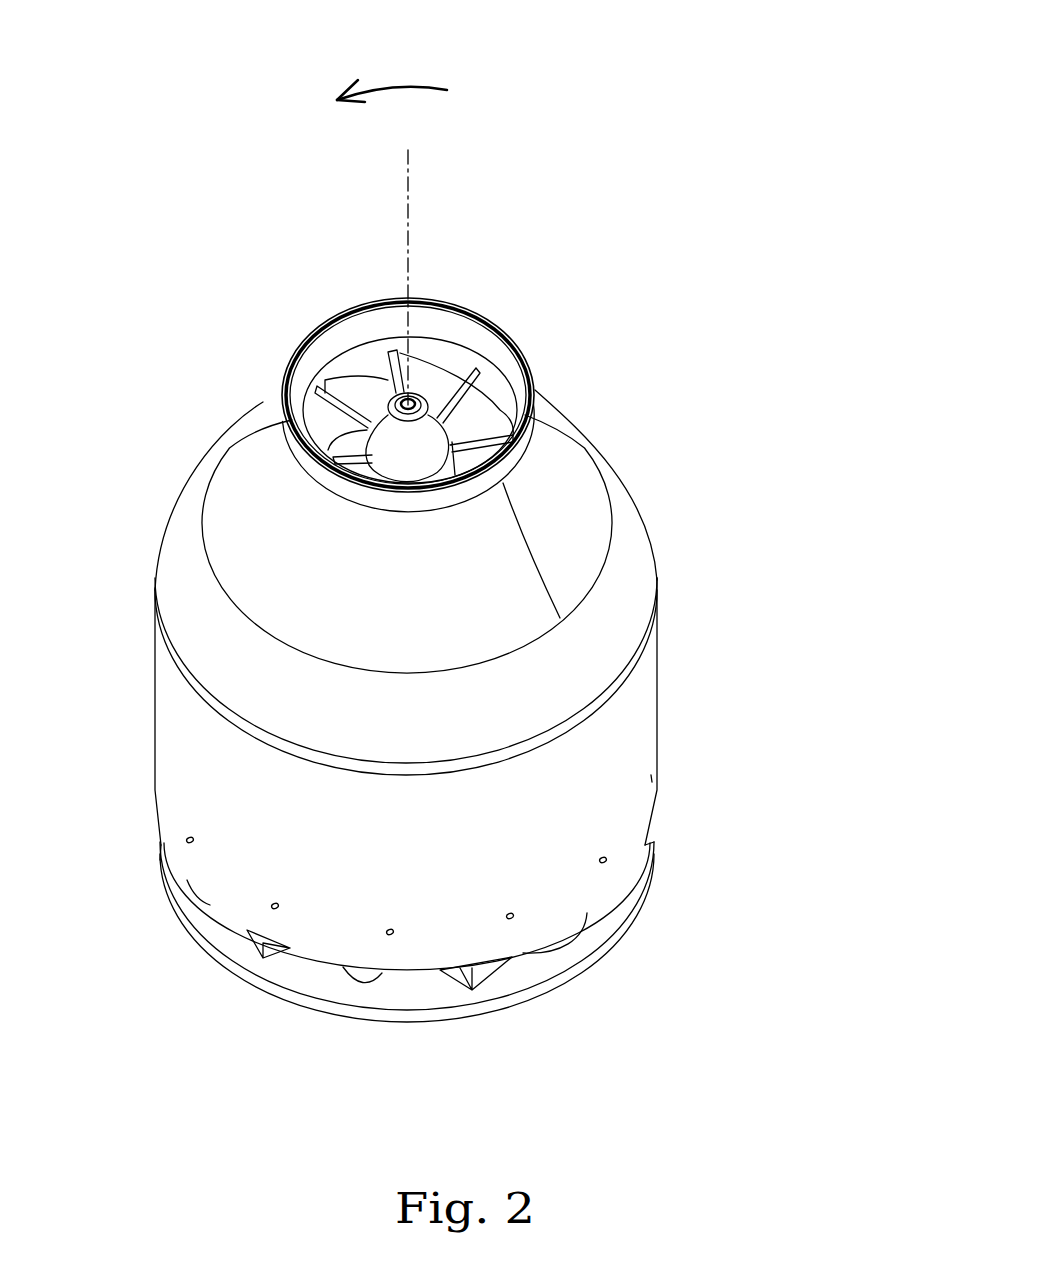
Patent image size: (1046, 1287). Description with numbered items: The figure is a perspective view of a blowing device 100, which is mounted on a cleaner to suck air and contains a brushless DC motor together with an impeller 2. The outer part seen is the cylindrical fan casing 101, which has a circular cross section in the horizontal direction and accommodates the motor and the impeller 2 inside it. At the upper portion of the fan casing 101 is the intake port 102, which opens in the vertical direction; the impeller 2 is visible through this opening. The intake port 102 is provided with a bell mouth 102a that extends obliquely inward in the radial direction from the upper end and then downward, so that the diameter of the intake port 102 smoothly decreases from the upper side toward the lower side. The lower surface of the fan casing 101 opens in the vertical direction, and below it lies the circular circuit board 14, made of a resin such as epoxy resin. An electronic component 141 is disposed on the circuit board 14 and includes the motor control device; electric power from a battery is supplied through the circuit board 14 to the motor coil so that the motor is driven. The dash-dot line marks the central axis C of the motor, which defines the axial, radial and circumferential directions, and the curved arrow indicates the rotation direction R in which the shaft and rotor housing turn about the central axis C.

The blowing device 100 is at (465, 568).
The fan casing 101 is at (612, 718).
The intake port 102 is at (350, 320).
The bell mouth 102a is at (307, 360).
The impeller 2 is at (407, 438).
The circuit board 14 is at (387, 1020).
The electronic component 141 is at (515, 965).
The central axis C is at (410, 200).
The rotation direction R is at (395, 85).